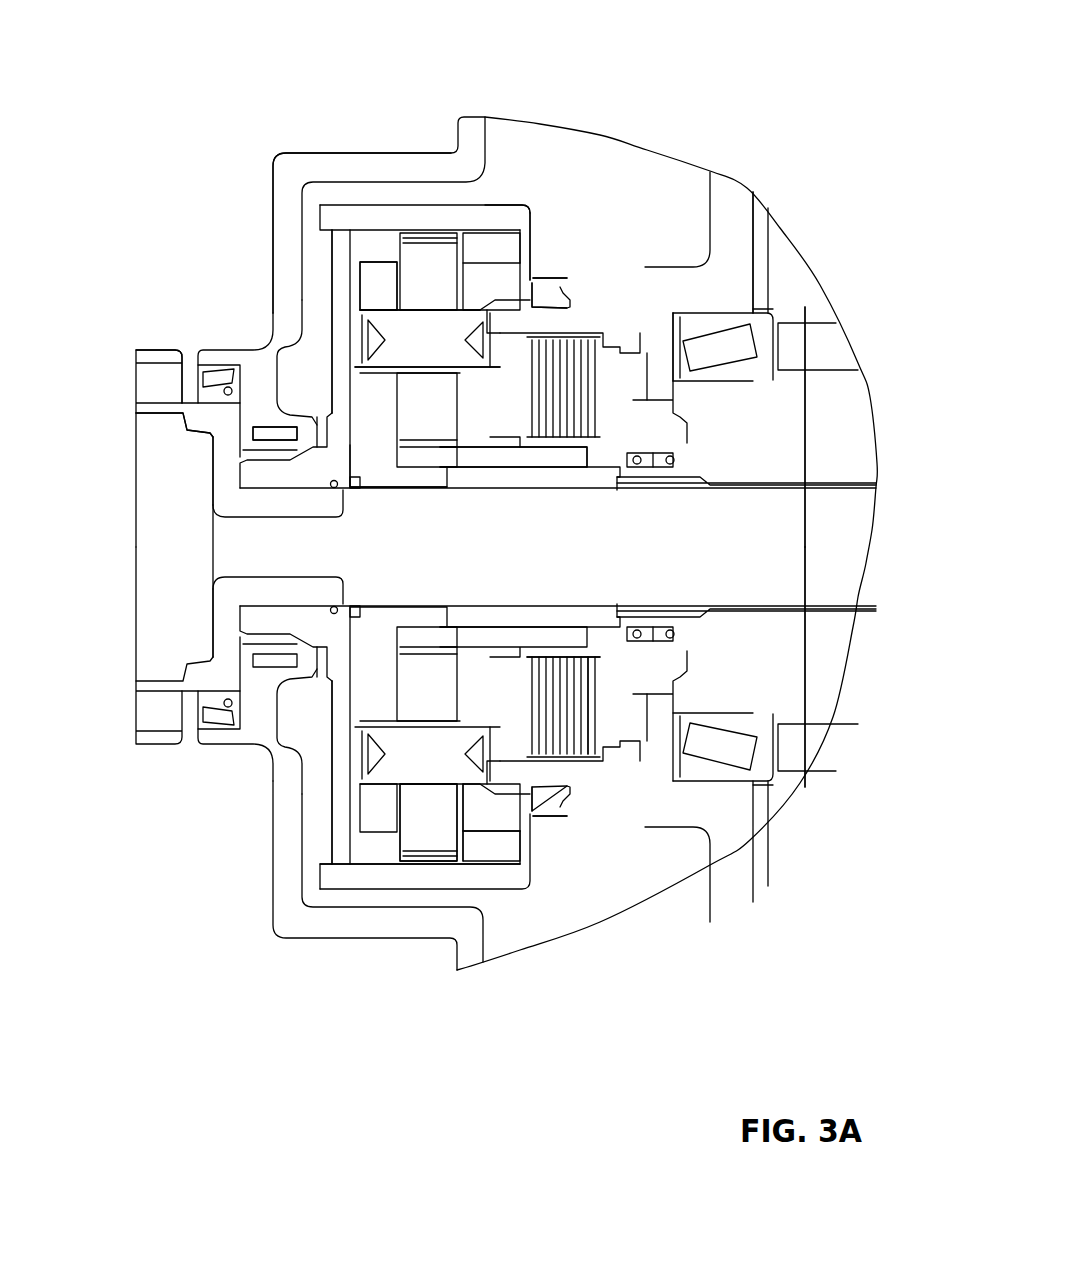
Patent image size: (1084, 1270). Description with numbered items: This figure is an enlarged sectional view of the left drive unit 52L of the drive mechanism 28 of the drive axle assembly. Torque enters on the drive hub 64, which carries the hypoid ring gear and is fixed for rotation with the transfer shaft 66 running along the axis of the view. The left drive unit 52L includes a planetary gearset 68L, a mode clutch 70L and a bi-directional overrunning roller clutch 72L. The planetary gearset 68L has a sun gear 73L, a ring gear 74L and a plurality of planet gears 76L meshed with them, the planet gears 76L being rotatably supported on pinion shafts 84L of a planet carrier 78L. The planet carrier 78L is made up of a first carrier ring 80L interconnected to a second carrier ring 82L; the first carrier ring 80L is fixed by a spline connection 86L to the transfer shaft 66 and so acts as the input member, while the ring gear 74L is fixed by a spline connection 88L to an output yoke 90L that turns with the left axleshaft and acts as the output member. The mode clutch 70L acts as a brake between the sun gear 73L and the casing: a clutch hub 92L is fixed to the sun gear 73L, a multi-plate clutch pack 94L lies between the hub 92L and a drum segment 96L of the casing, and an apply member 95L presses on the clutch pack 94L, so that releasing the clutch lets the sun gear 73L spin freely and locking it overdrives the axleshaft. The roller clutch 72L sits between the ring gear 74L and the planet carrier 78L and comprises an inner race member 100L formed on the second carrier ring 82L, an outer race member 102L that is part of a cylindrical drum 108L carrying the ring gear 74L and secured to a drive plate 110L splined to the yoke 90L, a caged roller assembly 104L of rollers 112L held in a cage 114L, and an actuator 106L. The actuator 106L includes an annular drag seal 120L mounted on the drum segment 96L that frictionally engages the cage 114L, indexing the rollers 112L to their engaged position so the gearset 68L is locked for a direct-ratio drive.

The drive mechanism 28 is at (860, 73).
The left drive unit 52L is at (398, 126).
The outer race member 102L is at (517, 212).
The planet gears 76L is at (417, 263).
The bi-directional overrunning roller clutch 72L is at (533, 233).
The planetary gearset 68L is at (393, 280).
The inner race member 100L is at (600, 282).
The actuator 106L is at (697, 264).
The pinion shafts 84L is at (393, 327).
The drag seal 120L is at (560, 290).
The first carrier ring 80L is at (373, 410).
The output yoke 90L is at (155, 357).
The apply member 95L is at (633, 403).
The drive hub 64 is at (850, 430).
The transfer shaft 66 is at (843, 517).
The sun gear 73L is at (440, 457).
The spline connection 88L is at (263, 490).
The spline connection 86L is at (400, 490).
The clutch hub 92L is at (565, 450).
The second carrier ring 82L is at (480, 697).
The drive plate 110L is at (340, 727).
The mode clutch 70L is at (537, 717).
The drum segment 96L is at (573, 767).
The multi-plate clutch pack 94L is at (593, 720).
The planet carrier 78L is at (367, 818).
The ring gear 74L is at (417, 843).
The cylindrical drum 108L is at (427, 877).
The caged roller assembly 104L is at (490, 853).
The rollers 112L is at (507, 847).
The cage 114L is at (530, 830).